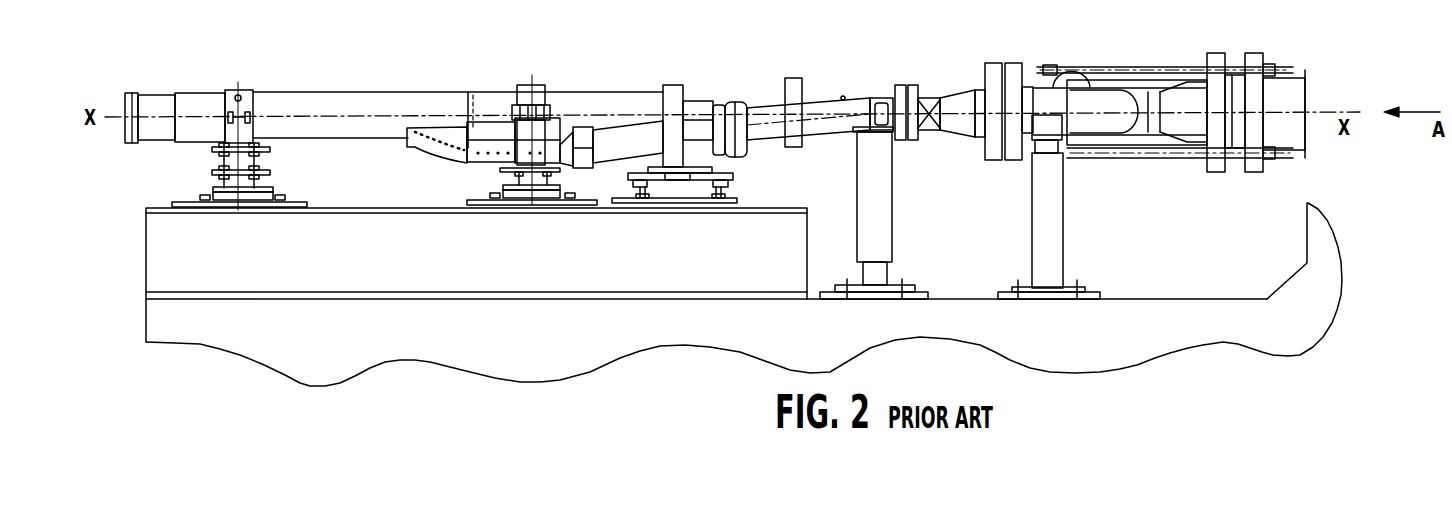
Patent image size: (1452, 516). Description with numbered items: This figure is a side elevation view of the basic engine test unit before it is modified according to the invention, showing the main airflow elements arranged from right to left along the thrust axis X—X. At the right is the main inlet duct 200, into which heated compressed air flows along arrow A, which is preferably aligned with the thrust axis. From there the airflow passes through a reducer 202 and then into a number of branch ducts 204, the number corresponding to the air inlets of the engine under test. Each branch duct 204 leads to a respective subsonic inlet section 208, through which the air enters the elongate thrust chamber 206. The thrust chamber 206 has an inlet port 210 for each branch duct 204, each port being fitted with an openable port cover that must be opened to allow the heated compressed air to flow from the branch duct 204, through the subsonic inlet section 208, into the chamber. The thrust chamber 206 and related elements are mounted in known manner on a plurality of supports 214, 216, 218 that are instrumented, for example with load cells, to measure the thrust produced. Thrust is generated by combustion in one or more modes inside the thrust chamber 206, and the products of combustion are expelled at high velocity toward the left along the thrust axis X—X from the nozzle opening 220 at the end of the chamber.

The main inlet duct 200 is at (1295, 100).
The reducer 202 is at (958, 102).
The branch duct 204 is at (772, 117).
The elongate thrust chamber 206 is at (382, 102).
The subsonic inlet section 208 is at (712, 108).
The inlet port 210 is at (445, 113).
The support 214 is at (267, 175).
The support 216 is at (512, 172).
The support 218 is at (722, 172).
The nozzle opening 220 is at (126, 120).